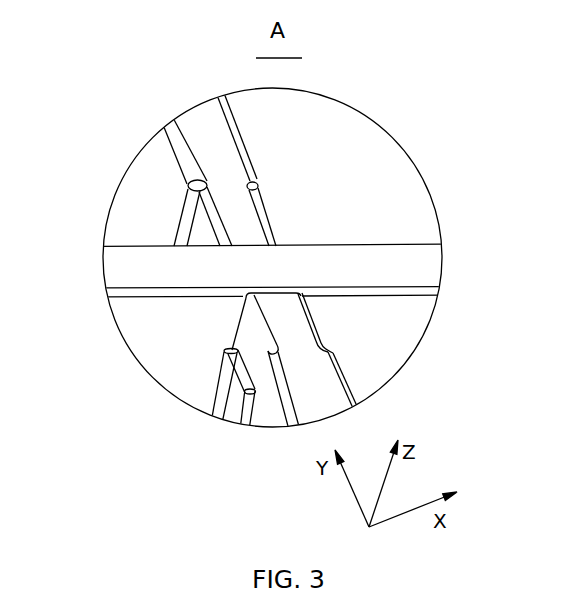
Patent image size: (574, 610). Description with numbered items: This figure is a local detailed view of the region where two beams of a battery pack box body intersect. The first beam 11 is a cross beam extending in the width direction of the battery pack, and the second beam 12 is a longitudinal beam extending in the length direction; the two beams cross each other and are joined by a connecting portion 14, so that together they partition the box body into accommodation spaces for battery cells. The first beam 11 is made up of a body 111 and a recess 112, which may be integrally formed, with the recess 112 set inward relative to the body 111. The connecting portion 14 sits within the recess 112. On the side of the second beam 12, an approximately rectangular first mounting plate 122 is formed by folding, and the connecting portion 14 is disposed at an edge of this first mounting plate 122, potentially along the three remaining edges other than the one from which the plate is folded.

The first beam 11 is at (204, 136).
The body 111 is at (325, 390).
The recess 112 is at (253, 228).
The second beam 12 is at (185, 343).
The first mounting plate 122 is at (233, 405).
The connecting portion 14 is at (243, 378).